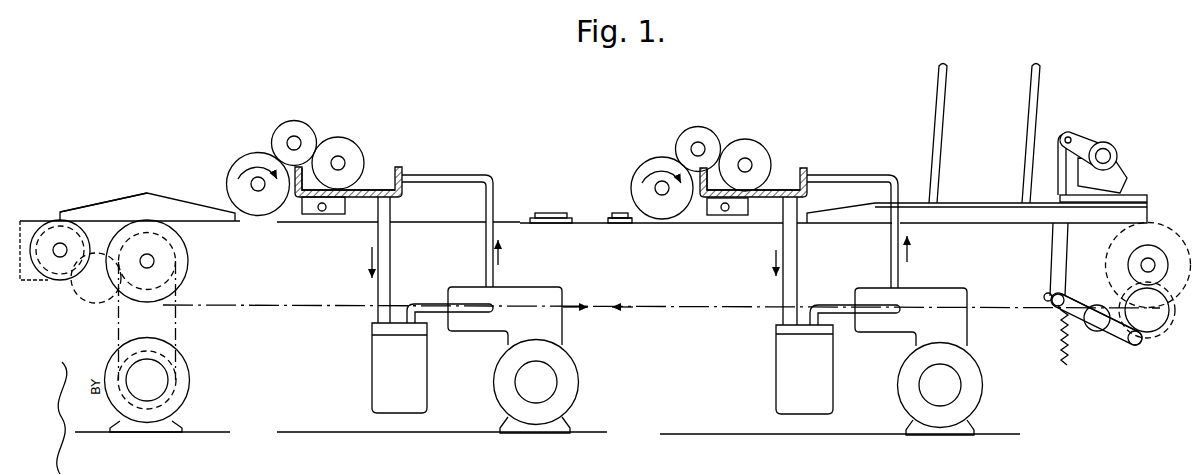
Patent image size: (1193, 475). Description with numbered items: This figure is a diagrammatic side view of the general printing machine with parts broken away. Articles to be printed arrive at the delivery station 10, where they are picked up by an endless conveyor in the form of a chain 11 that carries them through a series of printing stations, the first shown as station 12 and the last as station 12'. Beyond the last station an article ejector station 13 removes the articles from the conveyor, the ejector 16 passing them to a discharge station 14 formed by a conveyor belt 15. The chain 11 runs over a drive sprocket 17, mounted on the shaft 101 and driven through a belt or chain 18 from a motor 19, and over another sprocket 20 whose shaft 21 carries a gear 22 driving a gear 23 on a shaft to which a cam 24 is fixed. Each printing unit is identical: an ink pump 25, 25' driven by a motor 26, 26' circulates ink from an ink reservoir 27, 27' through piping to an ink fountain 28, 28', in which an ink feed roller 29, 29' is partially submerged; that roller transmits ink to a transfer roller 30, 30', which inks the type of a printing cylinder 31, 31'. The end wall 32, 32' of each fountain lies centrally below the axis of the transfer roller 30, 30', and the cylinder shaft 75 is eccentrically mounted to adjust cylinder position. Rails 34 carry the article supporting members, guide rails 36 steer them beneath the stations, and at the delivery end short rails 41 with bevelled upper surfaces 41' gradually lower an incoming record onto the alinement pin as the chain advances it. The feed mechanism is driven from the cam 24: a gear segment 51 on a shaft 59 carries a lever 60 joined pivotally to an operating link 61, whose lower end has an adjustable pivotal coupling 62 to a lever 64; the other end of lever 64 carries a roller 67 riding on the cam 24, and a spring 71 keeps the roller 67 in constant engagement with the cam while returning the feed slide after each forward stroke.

The delivery station 10 is at (1078, 121).
The chain 11 is at (692, 225).
The printing station 12 is at (911, 270).
The printing station 12' is at (698, 270).
The article ejector station 13 is at (158, 184).
The discharge station 14 is at (37, 202).
The conveyor belt 15 is at (41, 220).
The ejector 16 is at (125, 198).
The drive sprocket 17 is at (187, 277).
The belt or chain 18 is at (177, 328).
The motor 19 is at (190, 382).
The sprocket 20 is at (1118, 298).
The shaft 21 is at (1151, 257).
The gear 22 is at (1166, 258).
The gear 23 is at (1160, 334).
The cam 24 is at (1152, 333).
The ink pump 25 is at (871, 291).
The ink pump 25' is at (467, 298).
The motor 26 is at (943, 409).
The motor 26' is at (543, 408).
The ink reservoir 27 is at (800, 400).
The ink reservoir 27' is at (397, 397).
The ink fountain 28 is at (762, 162).
The ink fountain 28' is at (371, 163).
The ink feed roller 29 is at (759, 148).
The ink feed roller 29' is at (359, 152).
The transfer roller 30 is at (698, 124).
The transfer roller 30' is at (294, 121).
The printing cylinder 31 is at (662, 165).
The printing cylinder 31' is at (247, 157).
The end wall 32 is at (753, 150).
The end wall 32' is at (348, 151).
The rails 34 is at (545, 217).
The guide rails 36 is at (607, 213).
The short rails 41 is at (977, 144).
The upper surfaces 41' is at (995, 169).
The gear segment 51 is at (1121, 168).
The shaft 59 is at (1106, 154).
The lever 60 is at (1078, 138).
The operating link 61 is at (1062, 160).
The adjustable pivotal coupling 62 is at (1052, 306).
The lever 64 is at (1118, 347).
The roller 67 is at (1132, 345).
The spring 71 is at (1060, 347).
The shaft 75 is at (254, 181).
The shaft 101 is at (154, 261).